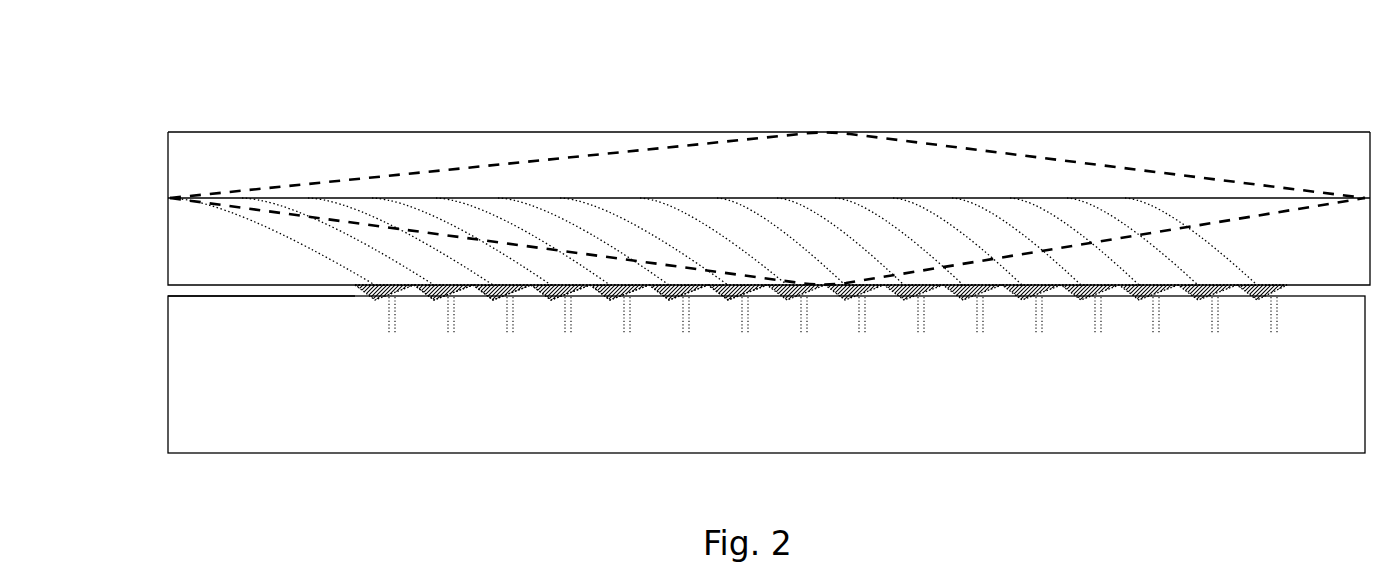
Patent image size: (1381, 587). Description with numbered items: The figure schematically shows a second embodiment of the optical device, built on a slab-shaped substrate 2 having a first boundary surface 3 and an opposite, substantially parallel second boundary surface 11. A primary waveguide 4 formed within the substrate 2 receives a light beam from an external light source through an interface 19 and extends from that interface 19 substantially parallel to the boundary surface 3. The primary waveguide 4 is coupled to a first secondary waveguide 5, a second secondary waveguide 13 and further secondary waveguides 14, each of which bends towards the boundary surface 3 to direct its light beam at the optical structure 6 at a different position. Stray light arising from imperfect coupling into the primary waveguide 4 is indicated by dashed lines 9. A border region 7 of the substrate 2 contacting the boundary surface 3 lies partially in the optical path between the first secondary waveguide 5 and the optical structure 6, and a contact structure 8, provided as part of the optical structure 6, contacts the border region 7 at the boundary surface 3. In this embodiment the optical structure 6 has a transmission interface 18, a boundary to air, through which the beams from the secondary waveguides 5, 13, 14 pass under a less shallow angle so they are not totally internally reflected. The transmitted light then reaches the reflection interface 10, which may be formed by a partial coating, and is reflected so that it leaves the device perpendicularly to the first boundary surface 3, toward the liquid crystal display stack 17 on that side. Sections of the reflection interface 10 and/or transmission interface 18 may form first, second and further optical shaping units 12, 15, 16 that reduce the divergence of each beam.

The substrate 2 is at (203, 260).
The boundary surface 3 is at (233, 290).
The primary waveguide 4 is at (247, 198).
The first secondary waveguide 5 is at (713, 152).
The optical structure 6 is at (570, 300).
The border region 7 is at (440, 268).
The contact structure 8 is at (467, 288).
The dashed lines 9 is at (332, 235).
The reflection interface 10 is at (450, 299).
The second boundary surface 11 is at (602, 132).
The first optical shaping unit 12 is at (428, 302).
The second secondary waveguide 13 is at (358, 220).
The further secondary waveguides 14 is at (497, 242).
The second optical shaping unit 15 is at (502, 298).
The further optical shaping unit 16 is at (613, 303).
The liquid crystal display stack 17 is at (915, 398).
The transmission interface 18 is at (440, 297).
The interface 19 is at (167, 198).